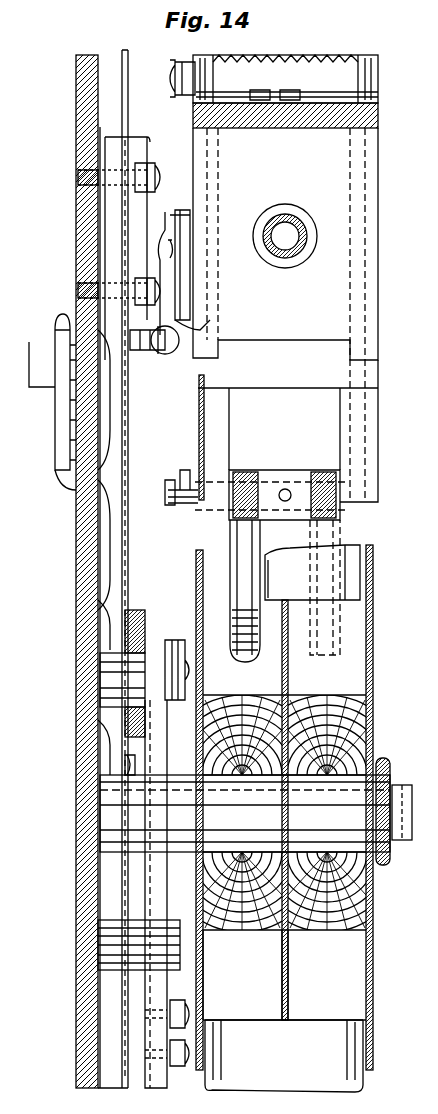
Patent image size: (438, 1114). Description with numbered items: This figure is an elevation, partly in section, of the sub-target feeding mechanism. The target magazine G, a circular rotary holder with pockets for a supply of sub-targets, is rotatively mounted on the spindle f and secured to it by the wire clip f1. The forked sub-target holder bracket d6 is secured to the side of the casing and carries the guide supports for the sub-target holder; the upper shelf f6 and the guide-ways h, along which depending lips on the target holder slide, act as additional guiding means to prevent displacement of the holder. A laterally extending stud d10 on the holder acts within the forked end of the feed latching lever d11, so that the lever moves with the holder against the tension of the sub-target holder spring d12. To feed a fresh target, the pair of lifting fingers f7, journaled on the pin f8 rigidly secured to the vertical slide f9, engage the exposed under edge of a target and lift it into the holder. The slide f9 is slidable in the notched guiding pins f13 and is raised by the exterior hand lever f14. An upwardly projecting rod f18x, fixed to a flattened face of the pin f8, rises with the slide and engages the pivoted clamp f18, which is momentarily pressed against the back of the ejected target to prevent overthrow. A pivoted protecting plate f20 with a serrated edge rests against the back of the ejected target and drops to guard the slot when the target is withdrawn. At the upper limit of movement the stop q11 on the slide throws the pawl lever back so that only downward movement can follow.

The pivoted clamp f18 is at (180, 60).
The pivoted protecting plate f20 is at (316, 54).
The sub-target holder bracket d6 is at (143, 140).
The upper shelf f6 is at (370, 127).
The laterally extending stud d10 is at (188, 210).
The feed latching lever d11 is at (195, 300).
The sub-target holder spring d12 is at (180, 335).
The guide-ways h is at (370, 355).
The exterior hand lever f14 is at (38, 340).
The upwardly projecting rod f18x is at (205, 408).
The pin f8 is at (183, 505).
The lifting fingers f7 is at (235, 590).
The wire clip f1 is at (386, 762).
The spindle f is at (395, 792).
The vertical slide f9 is at (162, 885).
The notched guiding pins f13 is at (102, 960).
The target magazine G is at (374, 995).
The stop q11 is at (175, 1080).